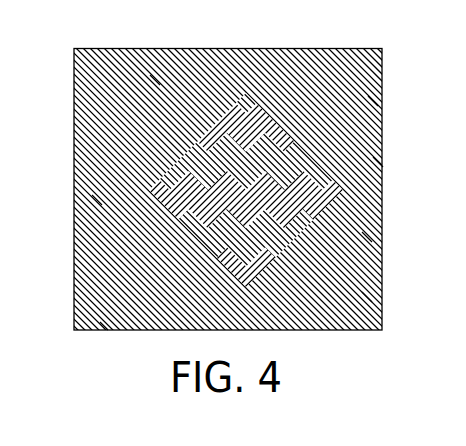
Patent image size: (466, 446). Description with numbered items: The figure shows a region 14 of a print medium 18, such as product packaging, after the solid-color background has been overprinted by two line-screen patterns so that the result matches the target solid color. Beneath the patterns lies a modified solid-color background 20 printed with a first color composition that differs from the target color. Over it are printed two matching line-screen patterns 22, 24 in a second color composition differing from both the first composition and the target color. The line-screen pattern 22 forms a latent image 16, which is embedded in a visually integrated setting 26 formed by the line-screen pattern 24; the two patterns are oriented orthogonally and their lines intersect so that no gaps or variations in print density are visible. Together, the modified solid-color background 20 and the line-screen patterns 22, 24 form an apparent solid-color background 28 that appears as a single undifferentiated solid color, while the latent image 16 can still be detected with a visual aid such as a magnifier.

The region 14 is at (297, 48).
The latent image 16 is at (150, 75).
The print medium 18 is at (383, 167).
The modified solid-color background 20 is at (108, 322).
The line-screen pattern 22 is at (362, 232).
The line-screen pattern 24 is at (368, 96).
The visually integrated setting 26 is at (362, 292).
The apparent solid-color background 28 is at (92, 195).